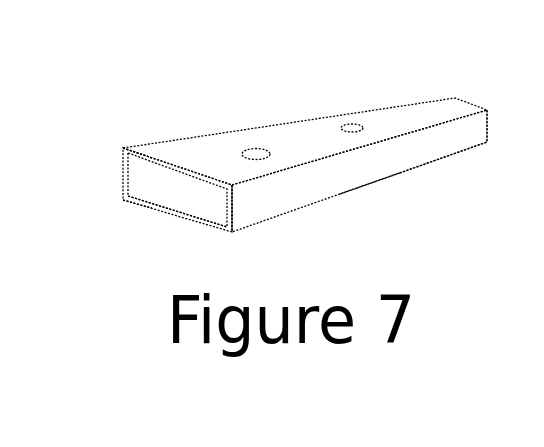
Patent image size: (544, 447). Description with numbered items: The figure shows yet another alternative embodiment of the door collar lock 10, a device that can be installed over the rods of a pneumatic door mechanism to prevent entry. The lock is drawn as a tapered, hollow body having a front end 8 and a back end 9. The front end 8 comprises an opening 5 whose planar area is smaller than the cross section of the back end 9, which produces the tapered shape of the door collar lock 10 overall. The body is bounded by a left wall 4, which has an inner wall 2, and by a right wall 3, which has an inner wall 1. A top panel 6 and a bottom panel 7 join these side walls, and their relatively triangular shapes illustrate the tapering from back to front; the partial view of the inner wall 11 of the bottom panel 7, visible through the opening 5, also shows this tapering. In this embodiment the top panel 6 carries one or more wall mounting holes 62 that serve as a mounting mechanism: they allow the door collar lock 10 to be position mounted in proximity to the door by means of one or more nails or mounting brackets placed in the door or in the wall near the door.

The inner wall 1 is at (222, 215).
The inner wall 2 is at (149, 188).
The right wall 3 is at (342, 193).
The left wall 4 is at (143, 140).
The opening 5 is at (135, 193).
The top panel 6 is at (321, 153).
The bottom panel 7 is at (365, 198).
The front end 8 is at (143, 218).
The back end 9 is at (510, 117).
The door collar lock 10 is at (425, 203).
The inner wall 11 is at (211, 209).
The holes 62 is at (260, 149).